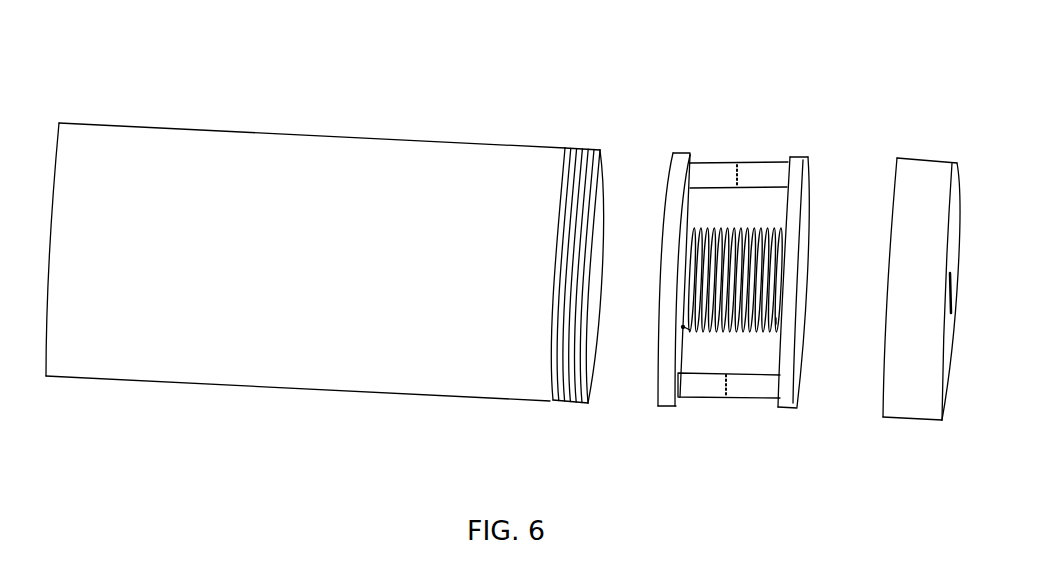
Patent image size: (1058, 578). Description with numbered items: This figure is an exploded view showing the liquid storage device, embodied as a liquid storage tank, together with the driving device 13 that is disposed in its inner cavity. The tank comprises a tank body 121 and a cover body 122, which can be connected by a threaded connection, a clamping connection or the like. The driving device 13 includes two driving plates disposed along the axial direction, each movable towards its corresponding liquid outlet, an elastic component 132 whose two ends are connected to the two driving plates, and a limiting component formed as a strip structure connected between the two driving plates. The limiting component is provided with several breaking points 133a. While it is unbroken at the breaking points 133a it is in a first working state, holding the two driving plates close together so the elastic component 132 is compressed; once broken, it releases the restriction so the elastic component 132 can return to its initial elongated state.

The driving device 13 is at (744, 242).
The tank body 121 is at (392, 385).
The cover body 122 is at (908, 413).
The elastic component 132 is at (777, 323).
The breaking point 133a is at (727, 397).